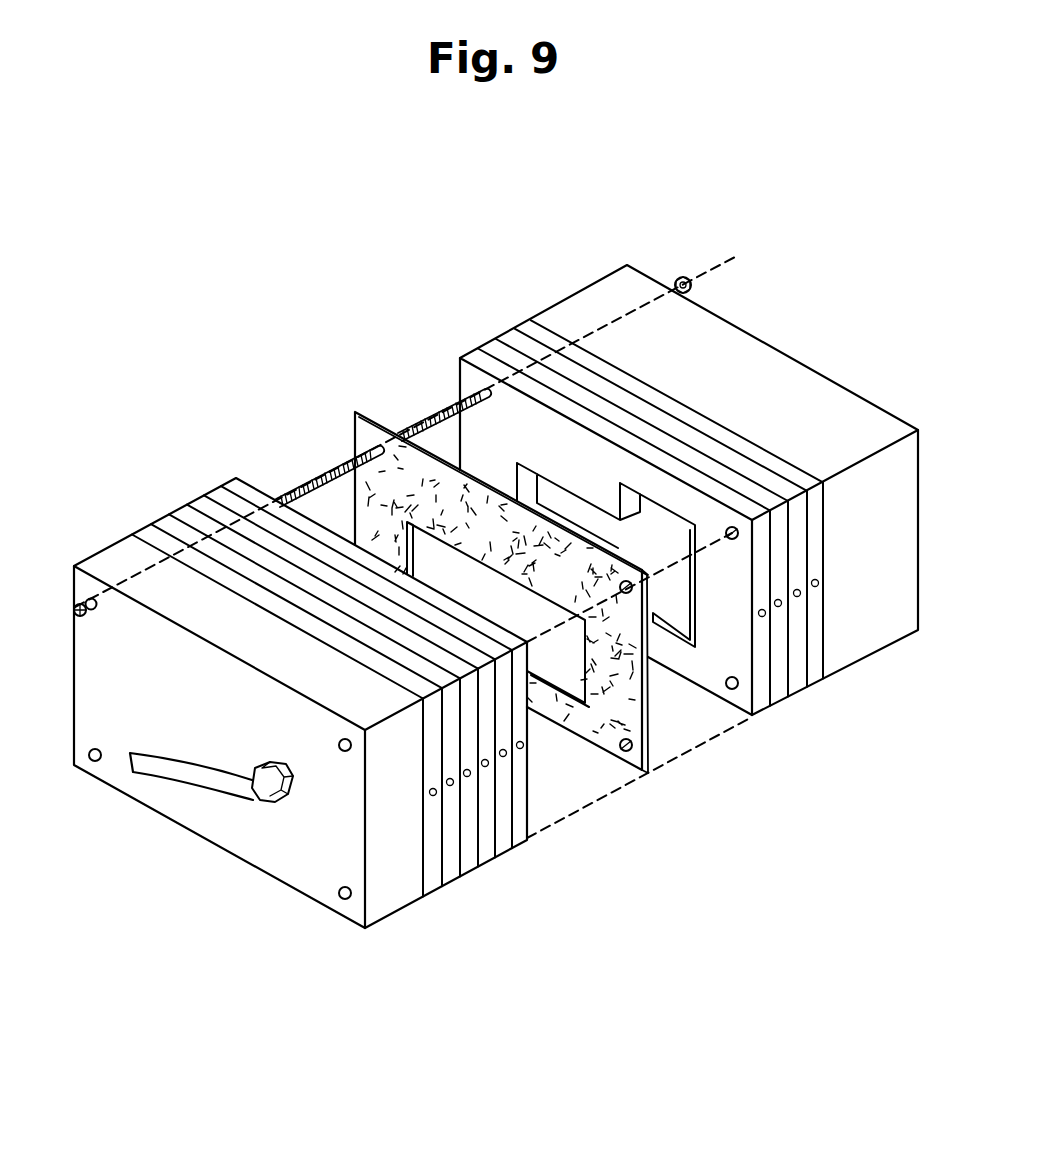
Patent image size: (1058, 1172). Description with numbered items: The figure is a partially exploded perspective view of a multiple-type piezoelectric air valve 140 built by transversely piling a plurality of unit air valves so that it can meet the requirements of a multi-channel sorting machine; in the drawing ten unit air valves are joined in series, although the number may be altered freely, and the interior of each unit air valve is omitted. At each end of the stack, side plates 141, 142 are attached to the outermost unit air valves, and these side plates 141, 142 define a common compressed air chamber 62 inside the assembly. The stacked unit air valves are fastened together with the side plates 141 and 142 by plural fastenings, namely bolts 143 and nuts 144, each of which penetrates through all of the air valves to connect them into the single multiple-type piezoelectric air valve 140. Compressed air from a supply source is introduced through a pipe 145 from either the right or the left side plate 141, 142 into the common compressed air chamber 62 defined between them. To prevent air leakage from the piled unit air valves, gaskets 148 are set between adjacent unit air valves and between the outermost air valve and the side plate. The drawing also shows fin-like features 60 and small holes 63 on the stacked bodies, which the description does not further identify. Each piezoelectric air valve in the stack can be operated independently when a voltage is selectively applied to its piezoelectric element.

The multiple-type piezoelectric air valve 140 is at (340, 344).
The side plate 141 is at (397, 886).
The side plate 142 is at (850, 635).
The bolt 143 is at (76, 605).
The nut 144 is at (680, 276).
The pipe 145 is at (233, 797).
The gasket 148 is at (628, 700).
The heat radiating fins 60 is at (777, 667).
The common compressed air chamber 62 is at (658, 533).
The hole 63 is at (819, 583).